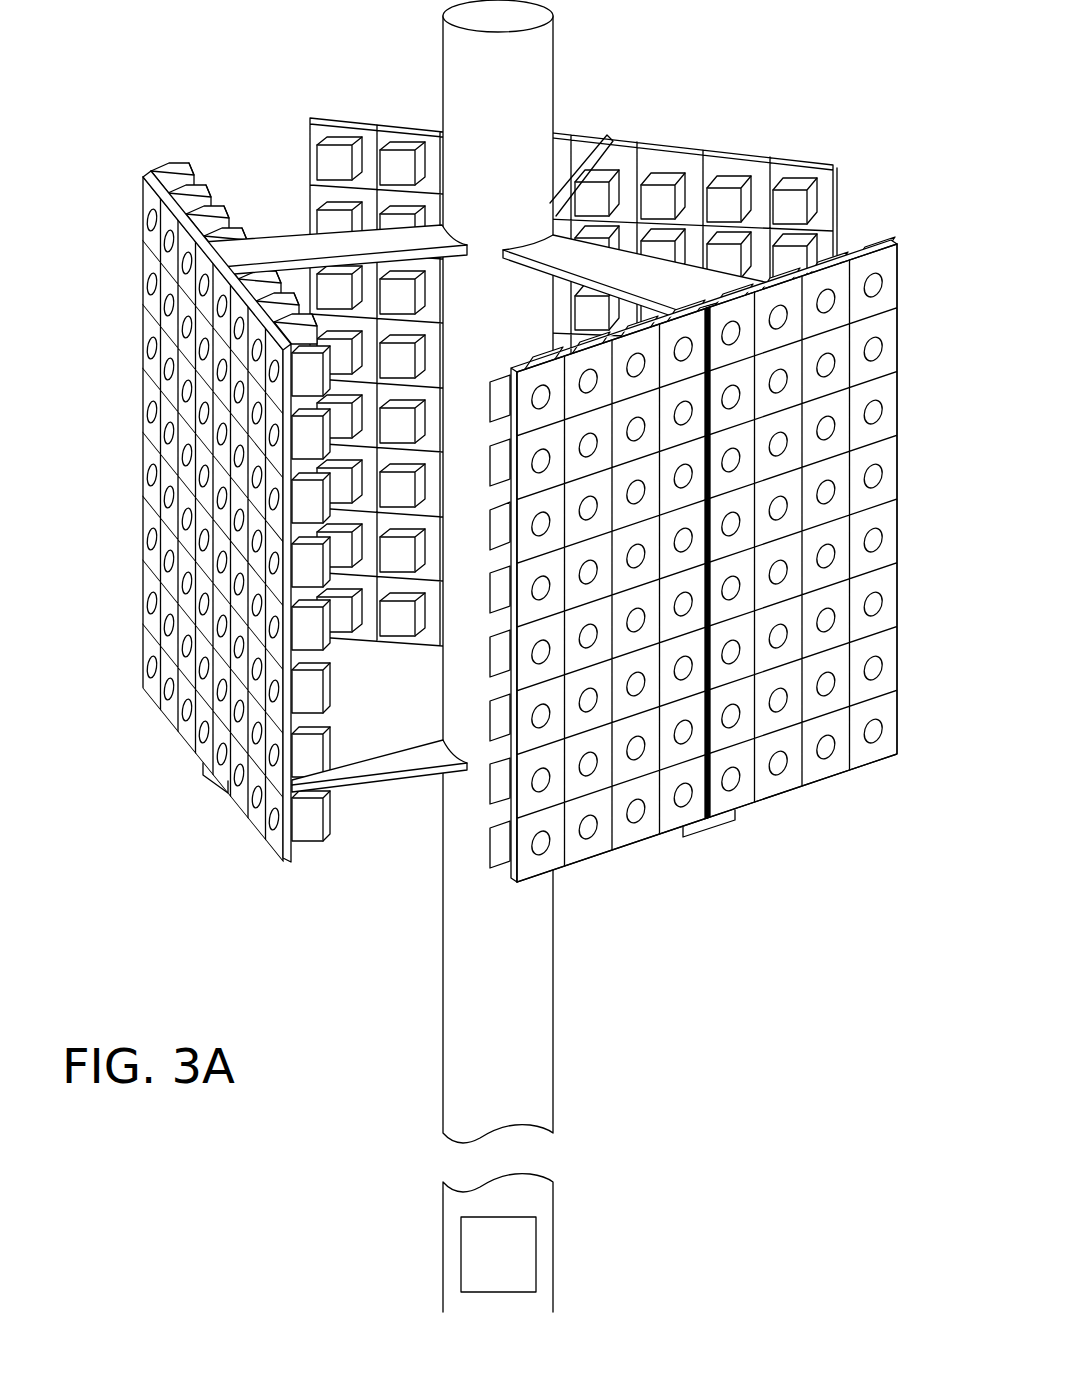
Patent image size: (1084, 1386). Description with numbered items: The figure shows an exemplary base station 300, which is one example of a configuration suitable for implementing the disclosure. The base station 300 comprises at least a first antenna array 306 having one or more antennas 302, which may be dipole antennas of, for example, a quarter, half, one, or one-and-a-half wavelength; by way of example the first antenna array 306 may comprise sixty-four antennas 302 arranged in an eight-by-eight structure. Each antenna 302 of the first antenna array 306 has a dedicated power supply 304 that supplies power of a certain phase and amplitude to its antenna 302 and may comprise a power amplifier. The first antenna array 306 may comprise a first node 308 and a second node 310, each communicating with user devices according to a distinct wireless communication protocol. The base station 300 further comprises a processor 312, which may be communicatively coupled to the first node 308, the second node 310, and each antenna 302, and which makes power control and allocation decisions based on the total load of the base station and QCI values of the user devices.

The base station 300 is at (812, 84).
The antenna 302 is at (143, 217).
The power supply 304 is at (180, 190).
The first antenna array 306 is at (840, 985).
The first node 308 is at (616, 890).
The second node 310 is at (812, 828).
The processor 312 is at (461, 1262).